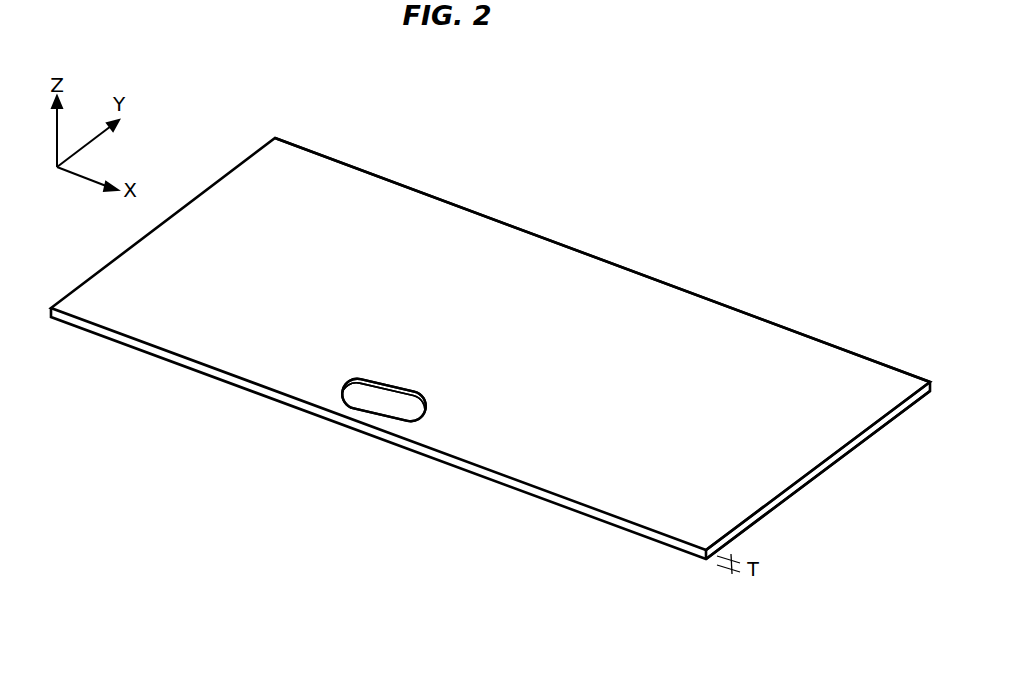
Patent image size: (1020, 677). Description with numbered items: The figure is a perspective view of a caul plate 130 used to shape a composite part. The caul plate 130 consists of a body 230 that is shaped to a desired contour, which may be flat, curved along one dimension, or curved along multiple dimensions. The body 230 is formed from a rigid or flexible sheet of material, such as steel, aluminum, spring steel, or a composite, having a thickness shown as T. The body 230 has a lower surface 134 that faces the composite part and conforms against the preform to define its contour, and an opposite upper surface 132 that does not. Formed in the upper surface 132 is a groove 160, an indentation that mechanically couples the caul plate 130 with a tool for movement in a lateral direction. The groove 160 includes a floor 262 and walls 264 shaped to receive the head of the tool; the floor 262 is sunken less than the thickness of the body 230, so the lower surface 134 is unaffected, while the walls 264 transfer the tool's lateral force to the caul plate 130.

The caul plate 130 is at (300, 117).
The upper surface 132 is at (753, 340).
The lower surface 134 is at (828, 474).
The body 230 is at (509, 256).
The groove 160 is at (436, 389).
The floor 262 is at (388, 399).
The walls 264 is at (357, 382).